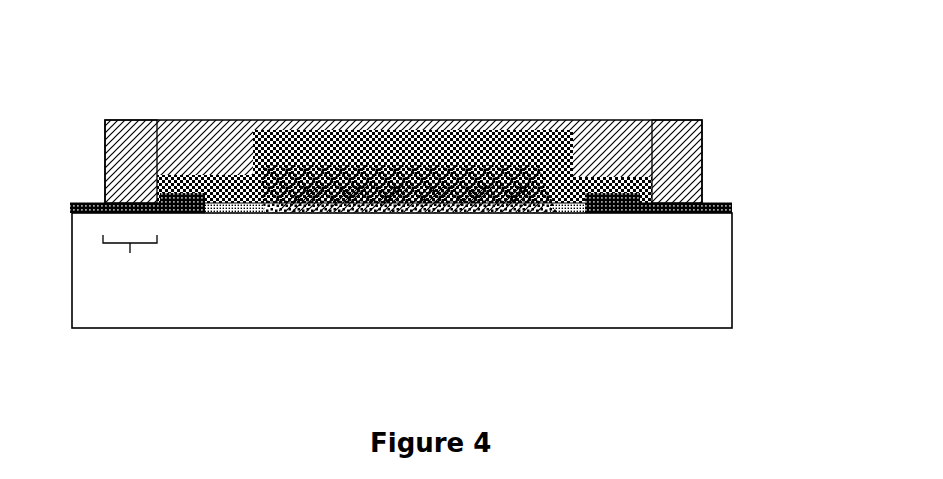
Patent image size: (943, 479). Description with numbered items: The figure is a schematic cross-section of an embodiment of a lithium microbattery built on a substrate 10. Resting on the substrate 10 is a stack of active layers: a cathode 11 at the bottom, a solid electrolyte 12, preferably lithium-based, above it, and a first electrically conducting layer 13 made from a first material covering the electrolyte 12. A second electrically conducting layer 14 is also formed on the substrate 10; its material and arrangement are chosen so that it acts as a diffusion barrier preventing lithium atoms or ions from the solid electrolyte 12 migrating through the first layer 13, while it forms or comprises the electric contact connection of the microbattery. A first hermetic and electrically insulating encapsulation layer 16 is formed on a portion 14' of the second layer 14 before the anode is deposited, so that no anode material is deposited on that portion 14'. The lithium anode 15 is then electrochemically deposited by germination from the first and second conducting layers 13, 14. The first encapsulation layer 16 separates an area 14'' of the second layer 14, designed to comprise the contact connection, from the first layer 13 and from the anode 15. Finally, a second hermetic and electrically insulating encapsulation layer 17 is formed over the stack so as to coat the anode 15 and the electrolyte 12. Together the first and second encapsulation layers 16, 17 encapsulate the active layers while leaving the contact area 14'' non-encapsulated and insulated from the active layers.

The substrate 10 is at (288, 315).
The cathode 11 is at (512, 200).
The solid electrolyte 12 is at (427, 172).
The first electrically conducting layer 13 is at (343, 163).
The second electrically conducting layer 14 is at (449, 210).
The portion of the second layer 14' is at (80, 262).
The contact connection area 14'' is at (400, 170).
The lithium anode 15 is at (255, 120).
The first hermetic and electrically insulating encapsulation layer 16 is at (130, 118).
The second hermetic and electrically insulating encapsulation layer 17 is at (602, 132).